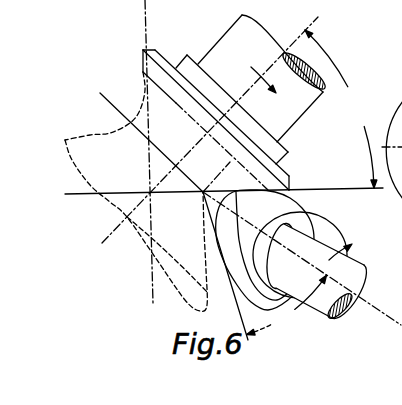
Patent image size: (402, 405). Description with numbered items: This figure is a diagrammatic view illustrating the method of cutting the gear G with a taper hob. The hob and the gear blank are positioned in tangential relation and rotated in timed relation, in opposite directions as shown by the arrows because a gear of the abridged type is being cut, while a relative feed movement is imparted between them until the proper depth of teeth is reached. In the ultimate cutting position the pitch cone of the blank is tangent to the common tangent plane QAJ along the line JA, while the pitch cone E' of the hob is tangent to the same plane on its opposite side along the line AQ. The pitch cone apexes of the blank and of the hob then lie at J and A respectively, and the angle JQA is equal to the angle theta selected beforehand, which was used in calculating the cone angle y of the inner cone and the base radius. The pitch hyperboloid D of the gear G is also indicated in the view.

The gear G is at (150, 51).
The vertex point of tangent plane QAJ Q is at (289, 176).
The pitch hyperboloid D is at (77, 141).
The pitch cone apex of the blank J is at (148, 190).
The pitch cone apex of the hob A is at (203, 194).
The cone angle of the inner cone y is at (341, 109).
The pitch cone of the hob E' is at (302, 265).